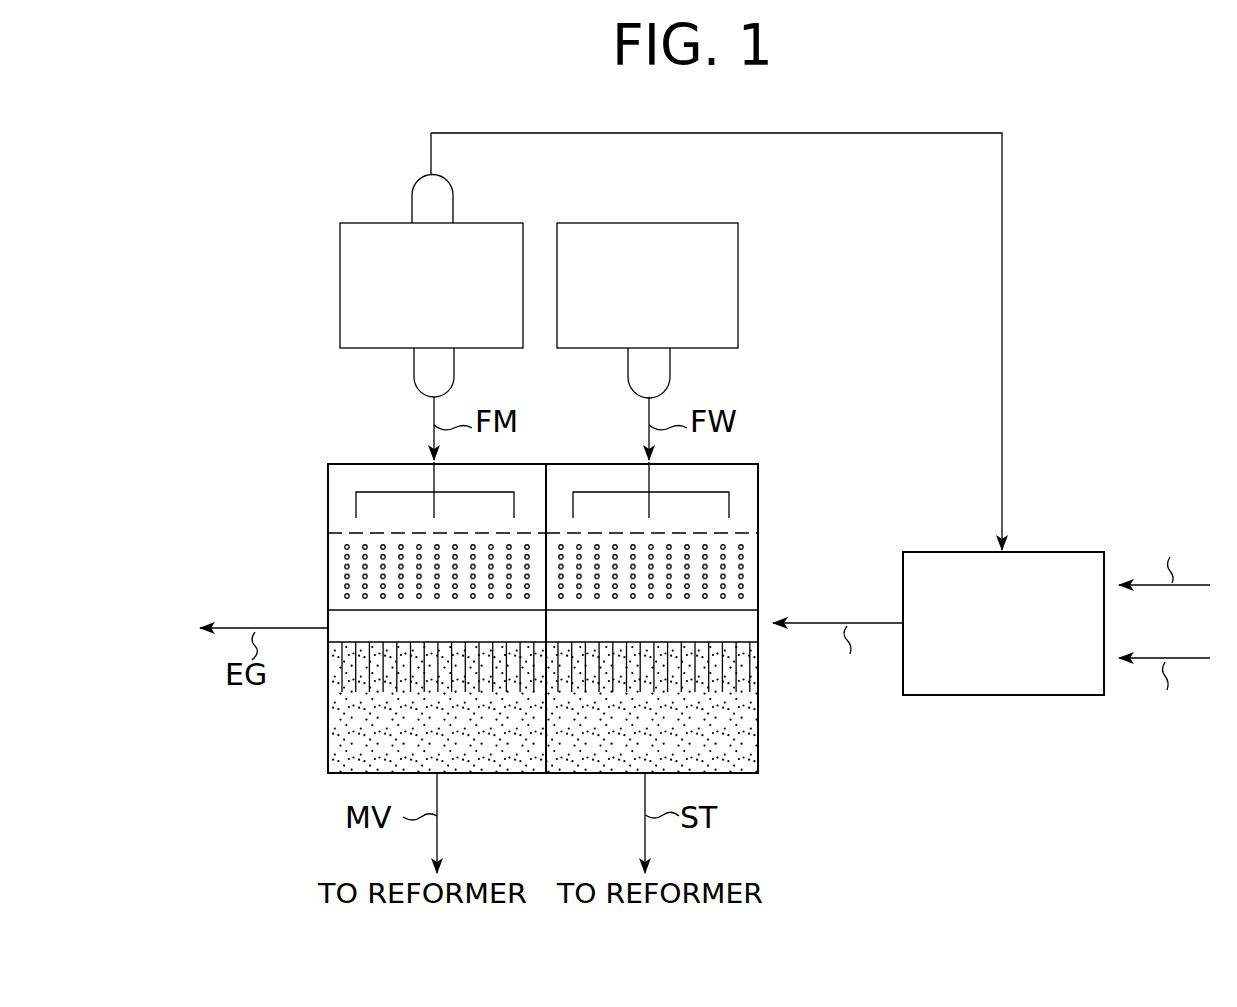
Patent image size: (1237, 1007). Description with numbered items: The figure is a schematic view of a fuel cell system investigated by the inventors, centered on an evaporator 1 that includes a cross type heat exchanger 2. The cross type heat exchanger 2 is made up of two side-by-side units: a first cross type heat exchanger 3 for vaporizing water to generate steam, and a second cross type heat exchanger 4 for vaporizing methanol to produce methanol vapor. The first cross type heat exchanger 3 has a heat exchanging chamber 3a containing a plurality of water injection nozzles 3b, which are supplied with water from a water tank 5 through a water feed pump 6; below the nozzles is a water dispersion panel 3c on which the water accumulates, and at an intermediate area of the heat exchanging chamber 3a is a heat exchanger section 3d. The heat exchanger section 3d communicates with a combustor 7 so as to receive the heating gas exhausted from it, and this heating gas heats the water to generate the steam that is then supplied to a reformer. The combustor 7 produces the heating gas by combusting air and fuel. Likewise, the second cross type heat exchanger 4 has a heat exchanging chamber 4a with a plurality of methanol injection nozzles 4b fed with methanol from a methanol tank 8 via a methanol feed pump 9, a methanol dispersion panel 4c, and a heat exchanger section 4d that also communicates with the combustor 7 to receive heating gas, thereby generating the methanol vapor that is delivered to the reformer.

The evaporator 1 is at (1040, 212).
The cross type heat exchanger 2 is at (766, 446).
The first cross type heat exchanger 3 is at (700, 585).
The heat exchanging chamber 3a is at (748, 590).
The water injection nozzles 3b is at (733, 492).
The water dispersion panel 3c is at (720, 530).
The heat exchanger section 3d is at (700, 677).
The second cross type heat exchanger 4 is at (402, 585).
The heat exchanging chamber 4a is at (336, 585).
The methanol injection nozzles 4b is at (432, 498).
The methanol dispersion panel 4c is at (340, 534).
The heat exchanger section 4d is at (410, 678).
The water tank 5 is at (738, 287).
The water feed pump 6 is at (670, 372).
The combustor 7 is at (996, 698).
The methanol tank 8 is at (340, 289).
The methanol feed pump 9 is at (414, 377).